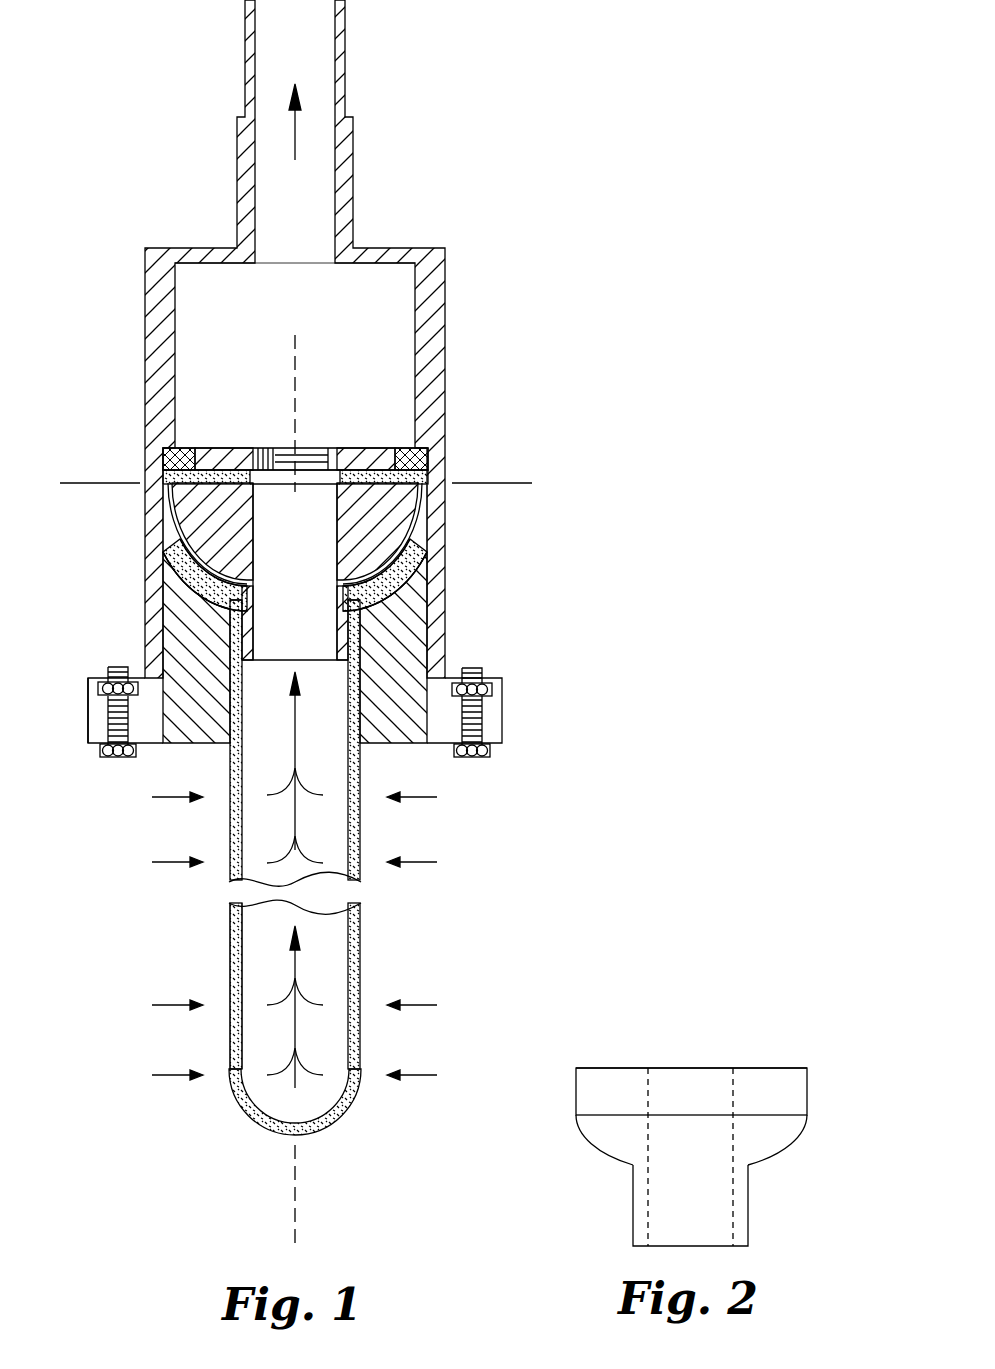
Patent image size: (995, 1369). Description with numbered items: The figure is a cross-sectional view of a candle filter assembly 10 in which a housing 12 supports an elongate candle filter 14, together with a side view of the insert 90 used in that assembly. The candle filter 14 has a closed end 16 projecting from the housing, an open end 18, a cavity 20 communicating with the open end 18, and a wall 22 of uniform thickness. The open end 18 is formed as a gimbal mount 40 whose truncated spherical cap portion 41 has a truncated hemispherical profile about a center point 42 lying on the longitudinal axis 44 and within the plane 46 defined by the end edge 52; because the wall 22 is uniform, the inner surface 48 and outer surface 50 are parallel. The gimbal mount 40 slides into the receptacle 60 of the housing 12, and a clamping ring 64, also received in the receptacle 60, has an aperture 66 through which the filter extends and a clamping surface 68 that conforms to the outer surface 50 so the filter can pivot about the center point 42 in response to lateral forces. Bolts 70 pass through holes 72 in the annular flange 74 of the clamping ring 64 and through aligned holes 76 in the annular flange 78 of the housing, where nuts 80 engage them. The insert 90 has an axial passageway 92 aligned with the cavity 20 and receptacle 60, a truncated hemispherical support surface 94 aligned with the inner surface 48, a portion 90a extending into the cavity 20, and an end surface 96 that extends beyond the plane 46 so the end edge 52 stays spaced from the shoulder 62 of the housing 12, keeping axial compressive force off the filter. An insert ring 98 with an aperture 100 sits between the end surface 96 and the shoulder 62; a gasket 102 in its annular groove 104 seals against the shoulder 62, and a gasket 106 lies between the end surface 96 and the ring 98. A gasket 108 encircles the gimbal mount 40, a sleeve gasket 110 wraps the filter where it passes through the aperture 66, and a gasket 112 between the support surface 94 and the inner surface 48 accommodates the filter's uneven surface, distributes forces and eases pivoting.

In FIG. 1, the candle filter assembly 10 is at (516, 101).
In FIG. 1, the housing 12 is at (450, 345).
In FIG. 1, the candle filter 14 is at (366, 950).
In FIG. 1, the closed end 16 is at (330, 1126).
In FIG. 1, the open end 18 is at (164, 493).
In FIG. 1, the cavity 20 is at (252, 749).
In FIG. 1, the wall 22 is at (364, 1040).
In FIG. 1, the gimbal mount 40 is at (152, 525).
In FIG. 1, the truncated spherical cap portion 41 is at (178, 591).
In FIG. 1, the center point 42 is at (302, 466).
In FIG. 1, the longitudinal axis 44 is at (299, 373).
In FIG. 1, the plane 46 is at (96, 481).
In FIG. 1, the inner surface 48 is at (190, 548).
In FIG. 1, the outer surface 50 is at (205, 548).
In FIG. 1, the end edge 52 is at (432, 470).
In FIG. 1, the receptacle 60 is at (176, 320).
In FIG. 1, the shoulder 62 is at (195, 460).
In FIG. 1, the clamping ring 64 is at (388, 745).
In FIG. 1, the aperture 66 is at (232, 745).
In FIG. 1, the clamping surface 68 is at (372, 586).
In FIG. 1, the bolts 70 is at (112, 758).
In FIG. 1, the holes 72 is at (106, 722).
In FIG. 1, the annular flange 74 is at (158, 746).
In FIG. 1, the holes 76 is at (98, 690).
In FIG. 1, the annular flange 78 is at (94, 678).
In FIG. 1, the nuts 80 is at (116, 668).
In FIG. 1, the insert 90 is at (438, 523).
In FIG. 2, the insert 90 is at (754, 1013).
In FIG. 2, the portion of the insert 90a is at (750, 1205).
In FIG. 2, the passageway 92 is at (654, 1086).
In FIG. 2, the support surface 94 is at (596, 1153).
In FIG. 2, the end surface 96 is at (607, 1068).
In FIG. 1, the insert ring 98 is at (235, 462).
In FIG. 1, the aperture 100 is at (325, 466).
In FIG. 1, the gasket 102 is at (276, 450).
In FIG. 1, the annular groove 104 is at (412, 450).
In FIG. 1, the gasket 106 is at (166, 468).
In FIG. 1, the gasket 108 is at (428, 562).
In FIG. 1, the sleeve gasket 110 is at (396, 622).
In FIG. 1, the gasket 112 is at (422, 580).